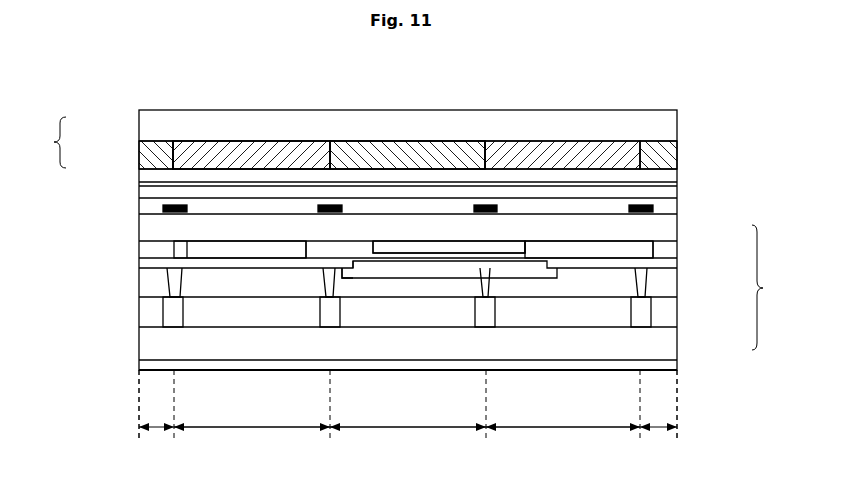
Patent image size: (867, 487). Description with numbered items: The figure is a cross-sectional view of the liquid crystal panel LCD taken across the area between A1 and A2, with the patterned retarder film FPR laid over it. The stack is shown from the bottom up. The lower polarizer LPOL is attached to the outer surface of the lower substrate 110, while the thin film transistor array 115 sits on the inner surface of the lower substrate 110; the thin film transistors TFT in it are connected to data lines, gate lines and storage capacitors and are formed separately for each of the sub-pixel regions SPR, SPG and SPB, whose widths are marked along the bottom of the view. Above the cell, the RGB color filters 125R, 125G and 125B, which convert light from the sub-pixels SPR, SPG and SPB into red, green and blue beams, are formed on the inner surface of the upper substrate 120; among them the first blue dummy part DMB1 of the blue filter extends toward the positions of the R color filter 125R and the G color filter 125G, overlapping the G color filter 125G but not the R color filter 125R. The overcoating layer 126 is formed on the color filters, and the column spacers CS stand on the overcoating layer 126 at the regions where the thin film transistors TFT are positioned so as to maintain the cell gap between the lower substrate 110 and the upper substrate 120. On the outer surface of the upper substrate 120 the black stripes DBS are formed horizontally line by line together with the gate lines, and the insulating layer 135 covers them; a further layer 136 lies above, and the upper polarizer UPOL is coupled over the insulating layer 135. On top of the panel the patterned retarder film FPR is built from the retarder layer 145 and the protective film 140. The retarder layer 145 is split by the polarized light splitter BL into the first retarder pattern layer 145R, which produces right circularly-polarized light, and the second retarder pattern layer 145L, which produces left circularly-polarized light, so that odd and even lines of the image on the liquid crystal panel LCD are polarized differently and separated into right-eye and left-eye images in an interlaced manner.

The protective film 140 is at (145, 127).
The retarder layer 145 is at (145, 155).
The patterned retarder film FPR is at (42, 142).
The polarized light splitter BL is at (173, 150).
The first retarder pattern layer 145R is at (250, 150).
The second retarder pattern layer 145L is at (405, 145).
The upper polarizer UPOL is at (672, 177).
The upper layer 136 is at (672, 191).
The insulating layer 135 is at (672, 206).
The black stripes DBS is at (163, 208).
The upper substrate 120 is at (672, 227).
The overcoating layer 126 is at (147, 265).
The column spacers CS is at (650, 281).
The thin film transistor array 115 is at (672, 312).
The thin film transistors TFT is at (170, 313).
The lower substrate 110 is at (672, 342).
The lower polarizer LPOL is at (672, 366).
The liquid crystal panel LCD is at (778, 287).
The R color filter 125R is at (255, 245).
The 1B dummy part DMB1 is at (364, 262).
The G color filter 125G is at (422, 245).
The B color filter 125B is at (568, 245).
The R sub-pixel SPR is at (252, 439).
The G sub-pixel SPG is at (408, 439).
The B sub-pixel SPB is at (563, 439).
The area A1 is at (140, 418).
The area A2 is at (676, 418).